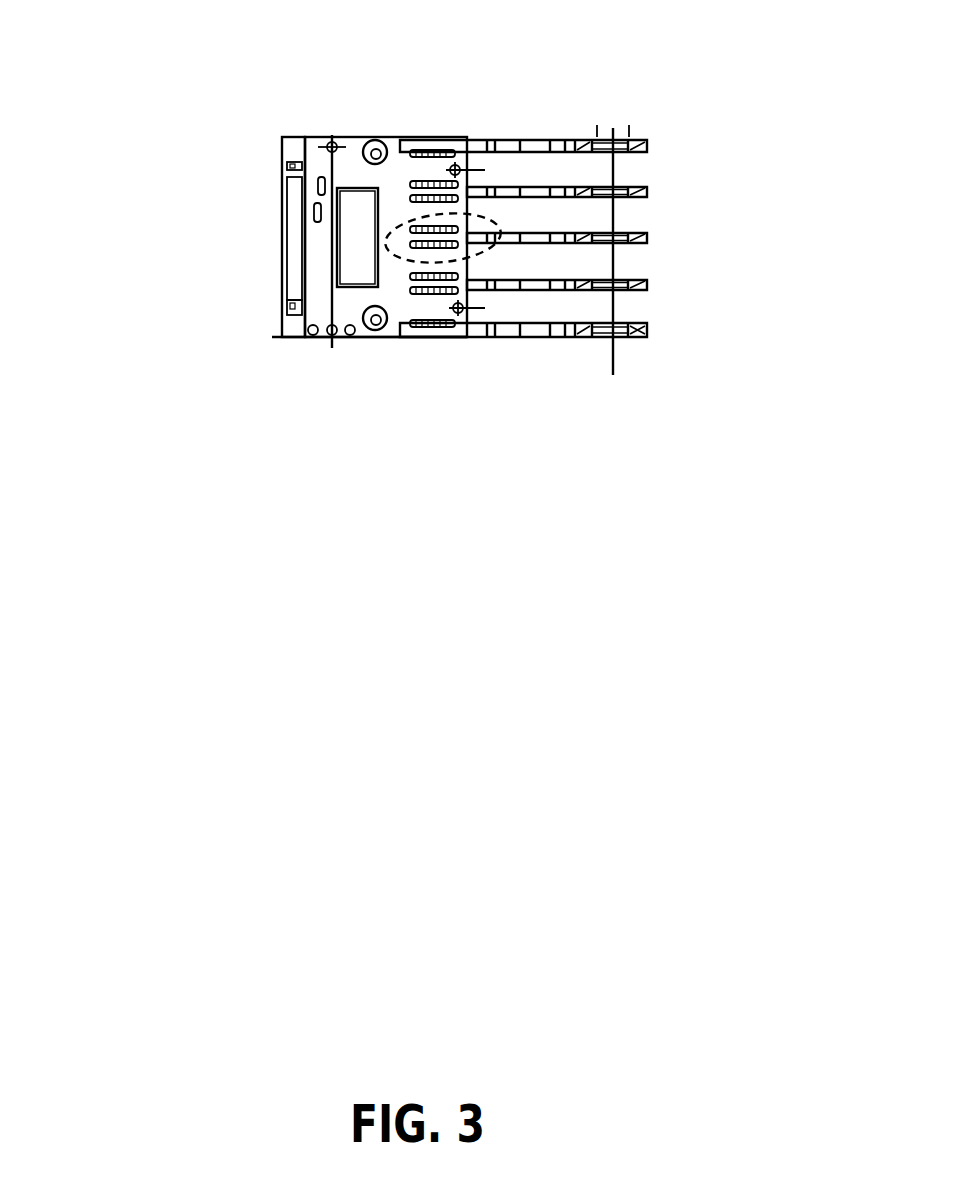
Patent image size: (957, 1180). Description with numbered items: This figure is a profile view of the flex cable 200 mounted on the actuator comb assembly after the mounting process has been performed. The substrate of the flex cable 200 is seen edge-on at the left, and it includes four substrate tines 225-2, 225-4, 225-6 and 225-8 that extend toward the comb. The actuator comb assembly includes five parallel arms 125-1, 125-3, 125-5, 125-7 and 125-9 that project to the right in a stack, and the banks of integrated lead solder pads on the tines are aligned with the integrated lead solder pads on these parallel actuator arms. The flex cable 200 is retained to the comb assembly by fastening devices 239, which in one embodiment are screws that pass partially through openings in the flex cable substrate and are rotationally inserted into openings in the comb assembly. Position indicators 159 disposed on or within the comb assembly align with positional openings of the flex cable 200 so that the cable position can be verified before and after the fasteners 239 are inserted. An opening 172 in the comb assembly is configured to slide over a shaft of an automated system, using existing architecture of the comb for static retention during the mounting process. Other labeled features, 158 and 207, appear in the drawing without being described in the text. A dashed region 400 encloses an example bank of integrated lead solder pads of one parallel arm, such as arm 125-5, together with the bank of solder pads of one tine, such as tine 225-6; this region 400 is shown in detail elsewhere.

The flex cable 200 is at (273, 317).
The alignment pin 158 is at (325, 338).
The position indicator 159 is at (320, 138).
The opening 172 is at (603, 128).
The mounting screw 207 is at (453, 166).
The fastening device 239 is at (363, 140).
The substrate tine 225-2 is at (467, 168).
The substrate tine 225-4 is at (467, 213).
The substrate tine 225-6 is at (467, 258).
The substrate tine 225-8 is at (467, 300).
The parallel arm 125-1 is at (628, 137).
The parallel arm 125-3 is at (630, 187).
The parallel arm 125-5 is at (633, 233).
The parallel arm 125-7 is at (642, 277).
The parallel arm 125-9 is at (642, 338).
The region 400 is at (468, 268).